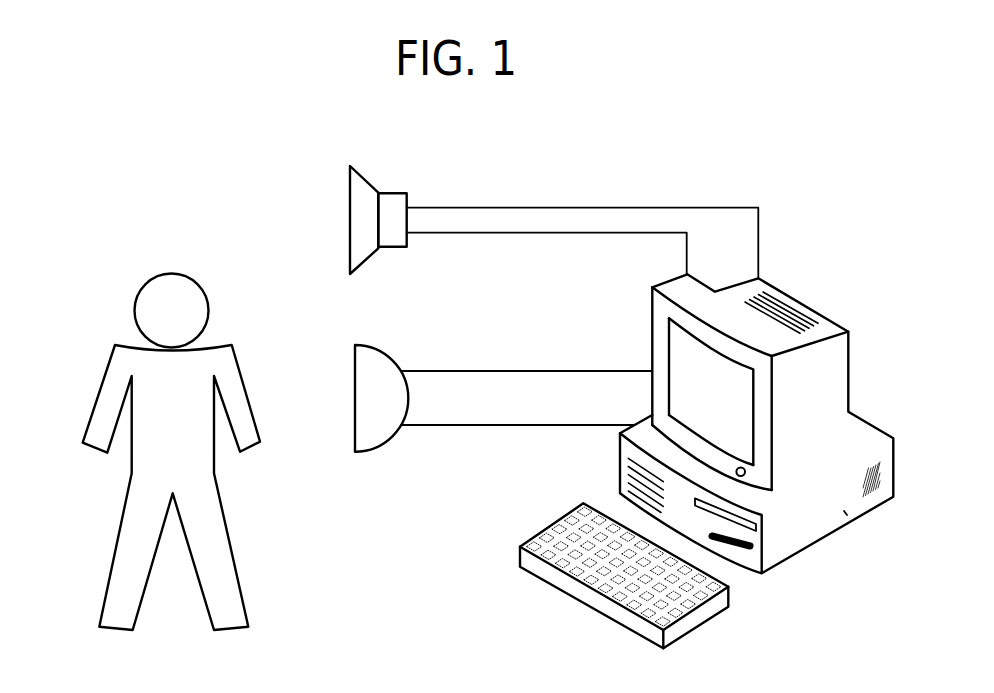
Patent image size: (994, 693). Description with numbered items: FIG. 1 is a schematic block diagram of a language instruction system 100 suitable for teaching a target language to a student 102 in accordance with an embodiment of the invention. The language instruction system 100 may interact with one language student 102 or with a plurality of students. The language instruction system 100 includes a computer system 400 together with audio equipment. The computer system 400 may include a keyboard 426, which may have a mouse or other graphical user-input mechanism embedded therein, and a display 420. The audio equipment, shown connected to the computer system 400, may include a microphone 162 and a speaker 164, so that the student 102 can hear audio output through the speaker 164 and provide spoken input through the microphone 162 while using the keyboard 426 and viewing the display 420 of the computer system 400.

The language instruction system 100 is at (699, 170).
The student 102 is at (154, 452).
The microphone 162 is at (503, 391).
The speaker 164 is at (554, 220).
The computer system 400 is at (756, 423).
The display 420 is at (754, 486).
The keyboard 426 is at (624, 575).